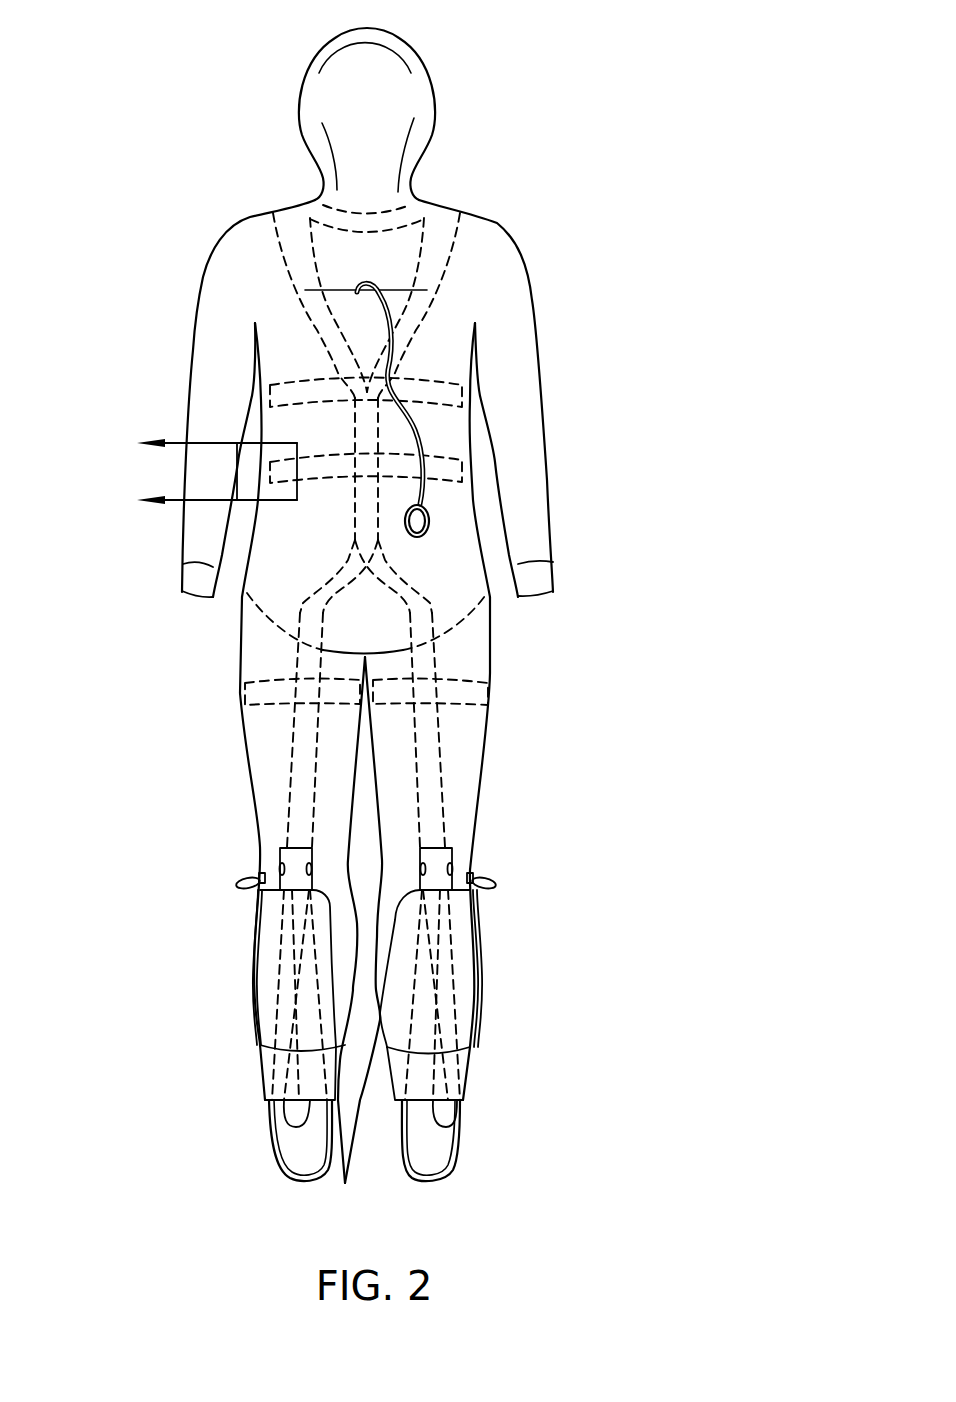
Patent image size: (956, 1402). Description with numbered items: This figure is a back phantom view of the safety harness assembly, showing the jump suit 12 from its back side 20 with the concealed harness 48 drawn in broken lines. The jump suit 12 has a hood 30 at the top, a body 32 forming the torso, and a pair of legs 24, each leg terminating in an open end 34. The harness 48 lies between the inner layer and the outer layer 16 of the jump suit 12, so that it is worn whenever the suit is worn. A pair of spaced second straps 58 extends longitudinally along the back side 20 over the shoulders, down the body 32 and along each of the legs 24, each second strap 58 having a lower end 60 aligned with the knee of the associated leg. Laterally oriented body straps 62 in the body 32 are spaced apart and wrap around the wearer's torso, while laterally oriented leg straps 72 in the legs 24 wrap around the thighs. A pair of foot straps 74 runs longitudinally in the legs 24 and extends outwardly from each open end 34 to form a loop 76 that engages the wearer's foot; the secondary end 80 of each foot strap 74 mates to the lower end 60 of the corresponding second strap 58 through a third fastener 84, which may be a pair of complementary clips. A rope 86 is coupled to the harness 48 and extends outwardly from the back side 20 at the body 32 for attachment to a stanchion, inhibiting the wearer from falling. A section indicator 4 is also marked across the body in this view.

The jump suit 12 is at (282, 178).
The outer layer 16 is at (232, 237).
The back side 20 is at (468, 268).
The pair of legs 24 is at (247, 767).
The hood 30 is at (370, 30).
The body 32 is at (303, 540).
The open end 34 is at (303, 1103).
The harness 48 is at (450, 305).
The second straps 58 is at (288, 262).
The lower end 60 is at (281, 853).
The body straps 62 is at (440, 407).
The leg straps 72 is at (270, 677).
The foot straps 74 is at (273, 1000).
The loop 76 is at (283, 1177).
The secondary end 80 is at (354, 941).
The third fasteners 84 is at (282, 846).
The rope 86 is at (436, 505).
The section line 4- 4 is at (212, 470).